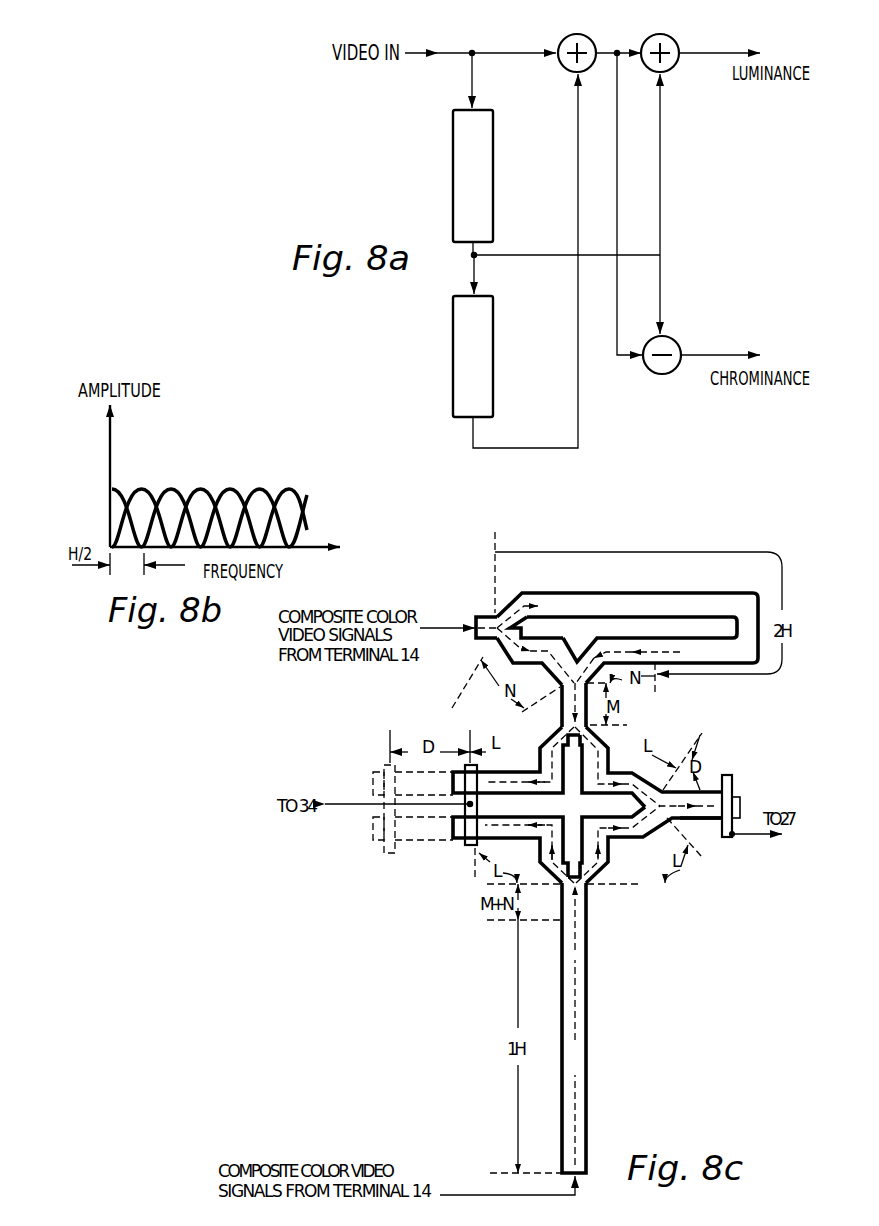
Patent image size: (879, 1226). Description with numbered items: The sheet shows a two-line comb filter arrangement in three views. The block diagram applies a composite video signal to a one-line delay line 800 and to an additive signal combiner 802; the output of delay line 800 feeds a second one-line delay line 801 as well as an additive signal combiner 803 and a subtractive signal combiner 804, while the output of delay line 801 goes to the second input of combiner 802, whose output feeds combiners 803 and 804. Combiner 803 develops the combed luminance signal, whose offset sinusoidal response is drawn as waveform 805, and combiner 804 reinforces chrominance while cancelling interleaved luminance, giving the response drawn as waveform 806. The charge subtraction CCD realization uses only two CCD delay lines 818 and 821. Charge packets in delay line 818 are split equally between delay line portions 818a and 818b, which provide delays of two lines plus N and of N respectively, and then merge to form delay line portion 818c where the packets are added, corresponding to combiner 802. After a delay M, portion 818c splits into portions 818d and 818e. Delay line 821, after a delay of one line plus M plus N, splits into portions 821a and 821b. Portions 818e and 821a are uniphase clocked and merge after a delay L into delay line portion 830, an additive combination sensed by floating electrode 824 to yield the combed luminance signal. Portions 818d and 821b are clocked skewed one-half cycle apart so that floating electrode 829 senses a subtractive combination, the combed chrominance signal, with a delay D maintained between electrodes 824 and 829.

In FIG. 8A, the 1H delay line 800 is at (452, 167).
In FIG. 8A, the second 1H delay line 801 is at (452, 320).
In FIG. 8A, the additive signal combiner 802 is at (568, 36).
In FIG. 8A, the additive signal combiner 803 is at (672, 38).
In FIG. 8A, the subtractive signal combiner 804 is at (666, 374).
In FIG. 8B, the waveform 805 is at (178, 488).
In FIG. 8B, the waveform 806 is at (143, 488).
In FIG. 8C, the CCD delay line 818 is at (496, 612).
In FIG. 8C, the delay line portion 818a is at (599, 593).
In FIG. 8C, the delay line portion 818b is at (545, 640).
In FIG. 8C, the delay line portion 818c is at (562, 712).
In FIG. 8C, the delay line portion 818d is at (540, 766).
In FIG. 8C, the delay line portion 818e is at (608, 763).
In FIG. 8C, the CCD delay line 821 is at (632, 1021).
In FIG. 8C, the delay line portion 821a is at (608, 852).
In FIG. 8C, the delay line portion 821b is at (541, 852).
In FIG. 8C, the floating electrode 824 is at (728, 775).
In FIG. 8C, the floating electrode 829 is at (467, 846).
In FIG. 8C, the delay line portion 830 is at (704, 821).